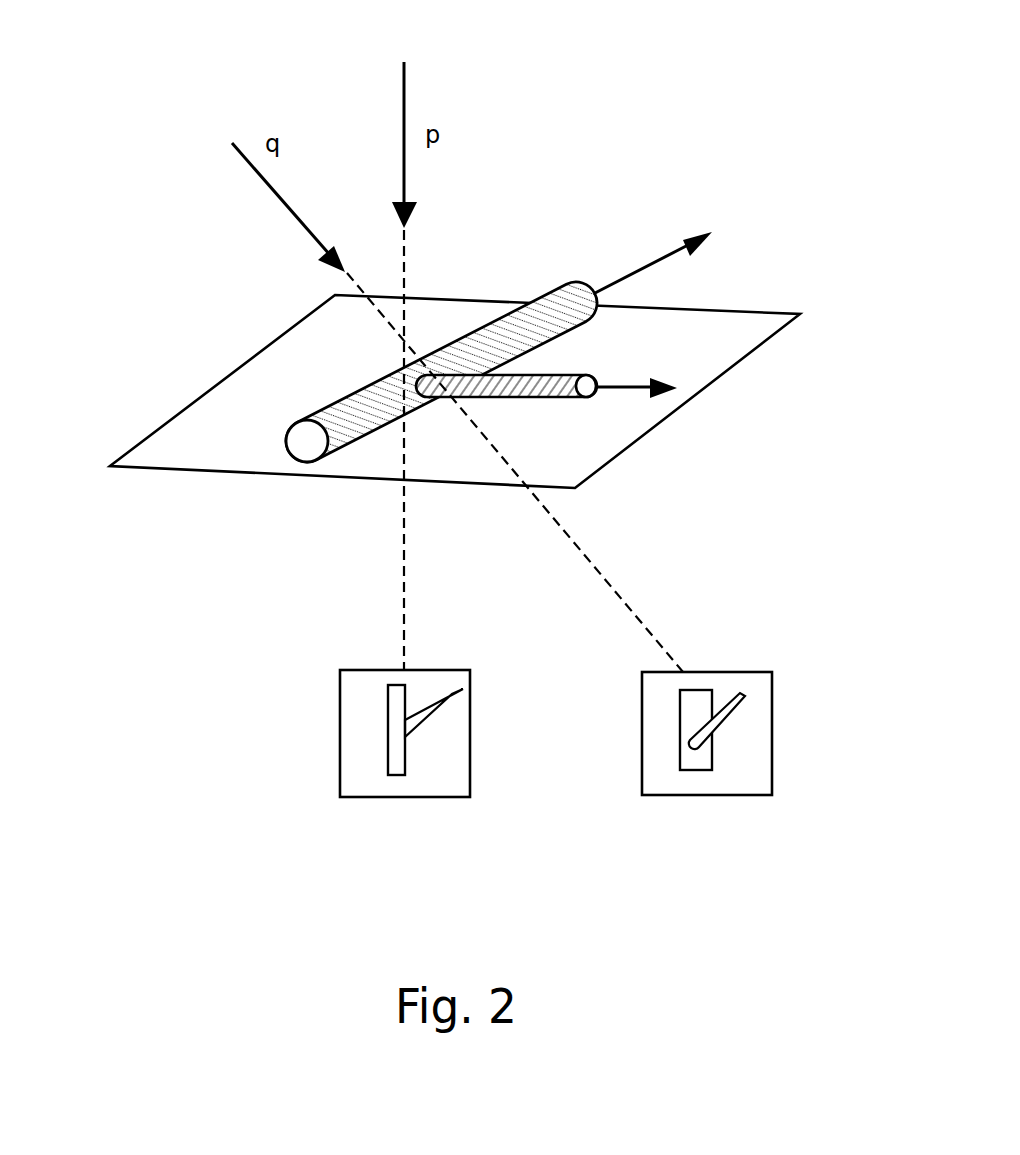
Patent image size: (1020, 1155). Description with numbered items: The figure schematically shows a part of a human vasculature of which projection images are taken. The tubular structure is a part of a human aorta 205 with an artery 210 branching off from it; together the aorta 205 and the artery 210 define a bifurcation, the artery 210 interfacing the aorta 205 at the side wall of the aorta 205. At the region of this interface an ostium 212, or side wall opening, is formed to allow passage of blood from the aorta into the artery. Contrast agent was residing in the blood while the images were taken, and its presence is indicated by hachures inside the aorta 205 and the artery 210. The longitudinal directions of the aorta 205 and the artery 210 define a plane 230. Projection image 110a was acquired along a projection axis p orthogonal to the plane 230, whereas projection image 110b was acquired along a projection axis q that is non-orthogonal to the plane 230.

The aorta 205 is at (495, 302).
The artery 210 is at (555, 400).
The ostium 212 is at (440, 362).
The plane 230 is at (222, 447).
The projection image 110a is at (410, 797).
The projection image 110b is at (705, 795).